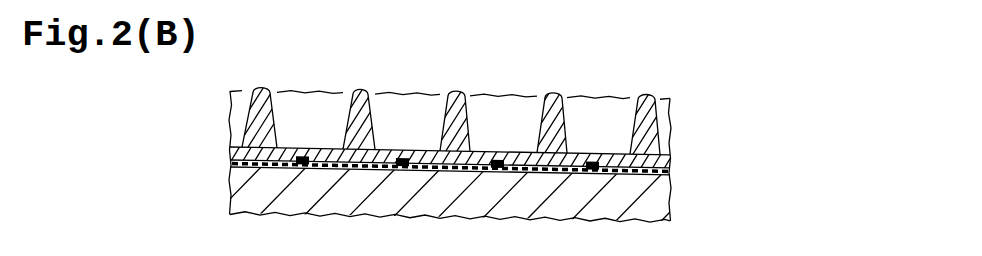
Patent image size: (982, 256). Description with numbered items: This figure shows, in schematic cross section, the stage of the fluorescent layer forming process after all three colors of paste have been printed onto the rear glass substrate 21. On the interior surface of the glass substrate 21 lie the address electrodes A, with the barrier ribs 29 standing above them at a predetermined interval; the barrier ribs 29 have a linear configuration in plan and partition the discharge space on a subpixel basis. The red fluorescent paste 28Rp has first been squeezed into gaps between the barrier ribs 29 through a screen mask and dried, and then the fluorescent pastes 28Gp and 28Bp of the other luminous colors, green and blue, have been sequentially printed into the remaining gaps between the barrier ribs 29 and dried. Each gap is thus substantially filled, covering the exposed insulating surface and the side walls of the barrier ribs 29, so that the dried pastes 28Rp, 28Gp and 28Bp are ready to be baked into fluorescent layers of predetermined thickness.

The rear glass substrate 21 is at (660, 196).
The barrier ribs 29 is at (262, 90).
The fluorescent paste 28Rp is at (300, 101).
The fluorescent paste 28Gp is at (403, 102).
The fluorescent paste 28Bp is at (498, 106).
The address electrodes A is at (306, 167).